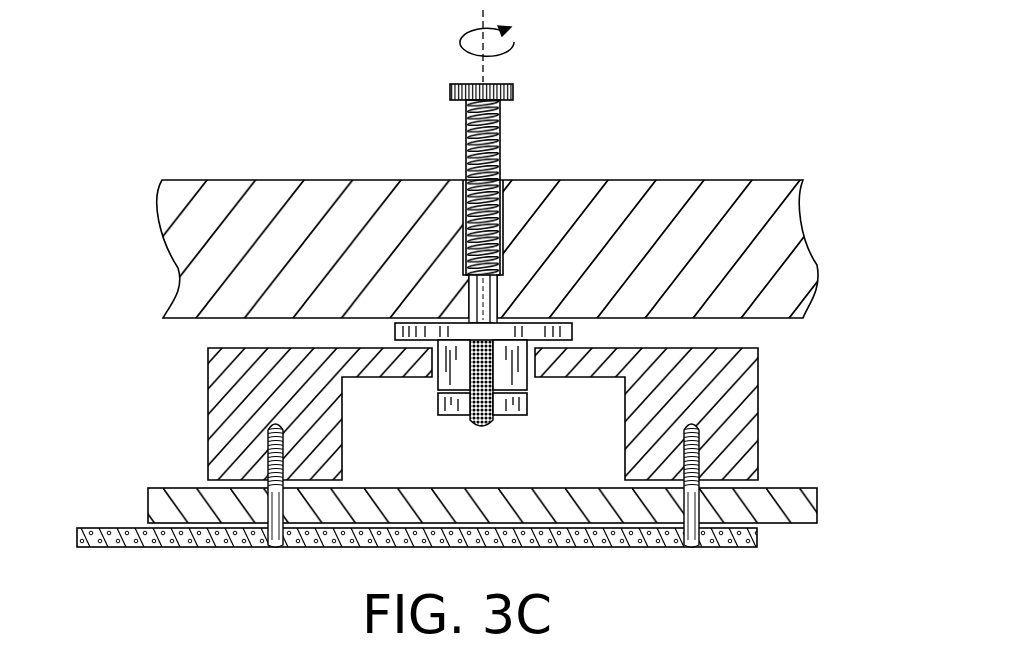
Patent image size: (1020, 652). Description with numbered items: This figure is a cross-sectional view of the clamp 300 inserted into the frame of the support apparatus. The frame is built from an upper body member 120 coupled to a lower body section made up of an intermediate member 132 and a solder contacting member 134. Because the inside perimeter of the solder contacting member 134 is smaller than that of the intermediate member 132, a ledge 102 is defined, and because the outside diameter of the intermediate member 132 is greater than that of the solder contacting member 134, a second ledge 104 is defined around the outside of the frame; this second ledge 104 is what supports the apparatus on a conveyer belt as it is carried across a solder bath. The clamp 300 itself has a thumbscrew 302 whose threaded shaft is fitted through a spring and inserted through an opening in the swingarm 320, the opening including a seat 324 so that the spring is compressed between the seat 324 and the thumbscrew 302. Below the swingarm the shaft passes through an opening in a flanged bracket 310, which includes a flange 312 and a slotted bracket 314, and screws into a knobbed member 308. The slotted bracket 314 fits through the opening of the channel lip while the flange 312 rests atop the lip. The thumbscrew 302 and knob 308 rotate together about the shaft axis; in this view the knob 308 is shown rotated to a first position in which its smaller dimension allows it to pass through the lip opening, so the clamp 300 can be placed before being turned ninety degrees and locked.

The clamp 300 is at (604, 50).
The thumbscrew 302 is at (515, 93).
The swingarm 320 is at (610, 180).
The seat 324 is at (466, 280).
The flange 312 is at (393, 333).
The flanged bracket 310 is at (482, 365).
The slotted bracket 314 is at (443, 378).
The knobbed member 308 is at (525, 407).
The upper body member 120 is at (760, 418).
The ledge 102 is at (460, 516).
The intermediate member 132 is at (818, 510).
The second ledge 104 is at (802, 526).
The solder contacting member 134 is at (757, 540).